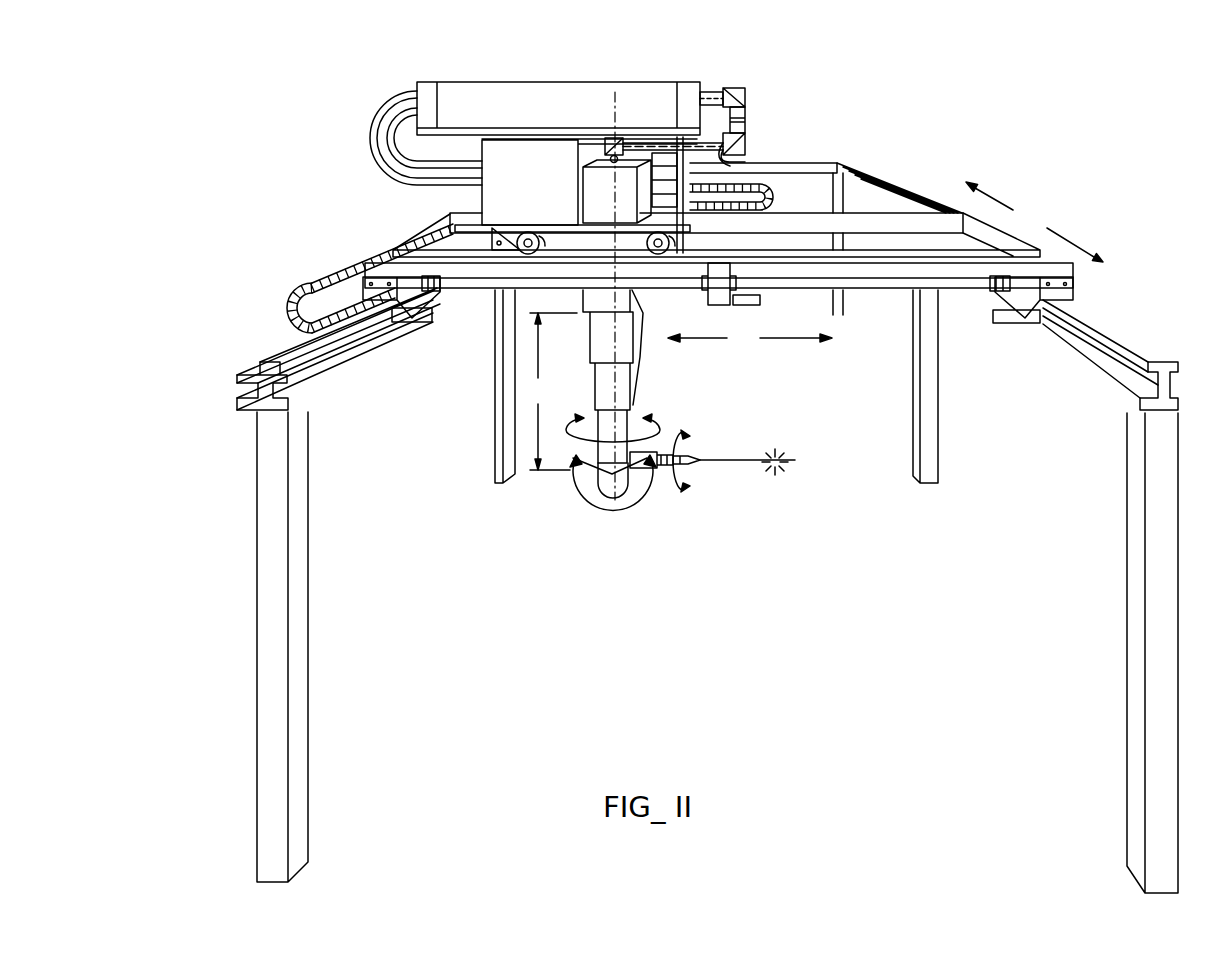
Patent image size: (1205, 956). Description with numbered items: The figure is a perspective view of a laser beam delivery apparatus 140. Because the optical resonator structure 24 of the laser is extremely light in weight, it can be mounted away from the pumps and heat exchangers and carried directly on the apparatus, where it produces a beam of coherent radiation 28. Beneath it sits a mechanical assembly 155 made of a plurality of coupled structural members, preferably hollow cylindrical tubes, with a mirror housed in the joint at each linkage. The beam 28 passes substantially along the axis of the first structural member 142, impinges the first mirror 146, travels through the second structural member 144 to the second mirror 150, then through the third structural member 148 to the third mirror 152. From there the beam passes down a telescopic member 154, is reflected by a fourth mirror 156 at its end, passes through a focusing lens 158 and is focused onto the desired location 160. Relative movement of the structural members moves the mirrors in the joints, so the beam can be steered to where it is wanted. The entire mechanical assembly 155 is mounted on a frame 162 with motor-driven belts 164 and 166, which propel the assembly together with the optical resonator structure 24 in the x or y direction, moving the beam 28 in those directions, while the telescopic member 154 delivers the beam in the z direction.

The optical resonator structure 24 is at (597, 81).
The first structural member 142 is at (712, 90).
The beam of coherent radiation 28 is at (773, 109).
The first mirror 146 is at (748, 93).
The second structural member 144 is at (748, 113).
The second mirror 150 is at (748, 137).
The third structural member 148 is at (748, 148).
The motor-driven belt 166 is at (775, 193).
The third mirror 152 is at (604, 147).
The mechanical assembly 155 is at (545, 210).
The motor-driven belt 164 is at (333, 283).
The frame 162 is at (783, 288).
The telescopic member 154 is at (637, 338).
The focusing lens 158 is at (688, 448).
The fourth mirror 156 is at (619, 516).
The desired location 160 is at (778, 479).
The laser beam delivery apparatus 140 is at (217, 531).